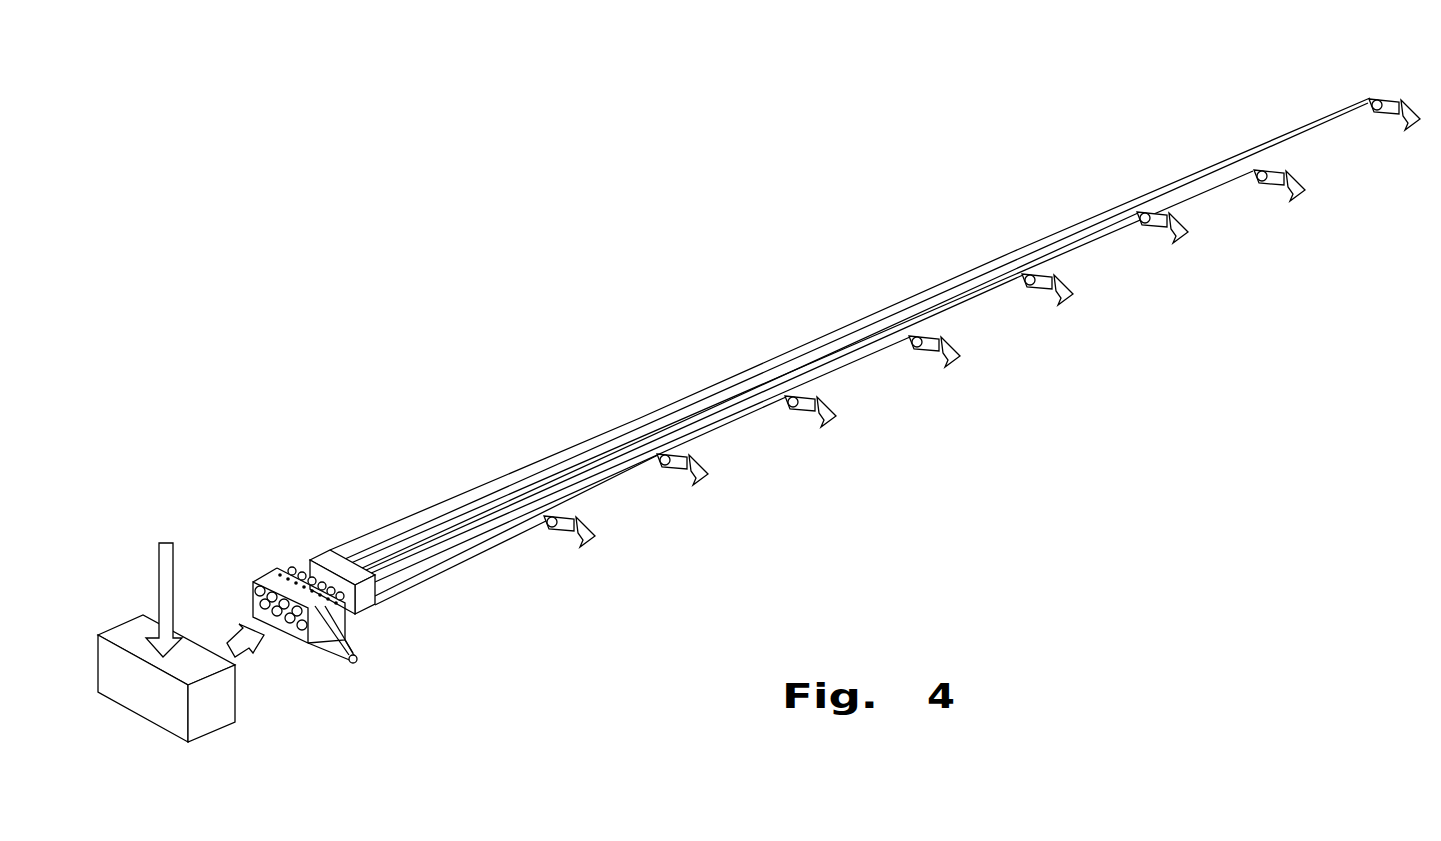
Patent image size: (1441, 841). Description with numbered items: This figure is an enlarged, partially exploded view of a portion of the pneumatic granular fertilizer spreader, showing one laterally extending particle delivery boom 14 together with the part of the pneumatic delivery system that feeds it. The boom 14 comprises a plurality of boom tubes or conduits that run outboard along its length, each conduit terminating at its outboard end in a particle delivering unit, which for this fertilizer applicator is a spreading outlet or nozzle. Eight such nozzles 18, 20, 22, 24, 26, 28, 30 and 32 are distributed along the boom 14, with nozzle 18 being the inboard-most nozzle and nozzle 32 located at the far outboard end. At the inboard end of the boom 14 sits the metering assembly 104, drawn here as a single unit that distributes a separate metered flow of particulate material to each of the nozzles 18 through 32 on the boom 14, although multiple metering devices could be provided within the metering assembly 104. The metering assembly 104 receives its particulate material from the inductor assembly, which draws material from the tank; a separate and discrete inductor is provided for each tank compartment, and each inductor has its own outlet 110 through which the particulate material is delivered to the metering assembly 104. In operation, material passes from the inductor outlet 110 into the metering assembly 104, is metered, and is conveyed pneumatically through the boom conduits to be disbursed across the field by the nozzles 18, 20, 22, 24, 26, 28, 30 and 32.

The particle delivery boom 14 is at (740, 350).
The nozzle 18 is at (583, 544).
The nozzle 20 is at (695, 482).
The nozzle 22 is at (823, 424).
The nozzle 24 is at (947, 364).
The nozzle 26 is at (1060, 302).
The nozzle 28 is at (1175, 240).
The nozzle 30 is at (1292, 198).
The nozzle 32 is at (1413, 110).
The metering assembly 104 is at (215, 705).
The inductor outlet 110 is at (168, 572).